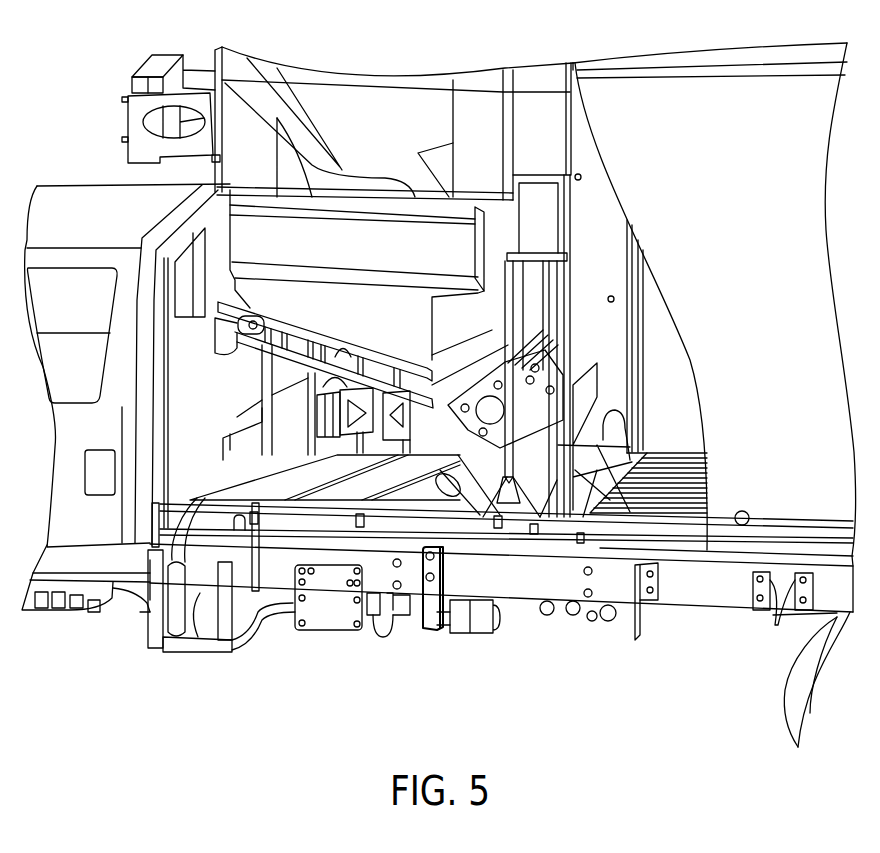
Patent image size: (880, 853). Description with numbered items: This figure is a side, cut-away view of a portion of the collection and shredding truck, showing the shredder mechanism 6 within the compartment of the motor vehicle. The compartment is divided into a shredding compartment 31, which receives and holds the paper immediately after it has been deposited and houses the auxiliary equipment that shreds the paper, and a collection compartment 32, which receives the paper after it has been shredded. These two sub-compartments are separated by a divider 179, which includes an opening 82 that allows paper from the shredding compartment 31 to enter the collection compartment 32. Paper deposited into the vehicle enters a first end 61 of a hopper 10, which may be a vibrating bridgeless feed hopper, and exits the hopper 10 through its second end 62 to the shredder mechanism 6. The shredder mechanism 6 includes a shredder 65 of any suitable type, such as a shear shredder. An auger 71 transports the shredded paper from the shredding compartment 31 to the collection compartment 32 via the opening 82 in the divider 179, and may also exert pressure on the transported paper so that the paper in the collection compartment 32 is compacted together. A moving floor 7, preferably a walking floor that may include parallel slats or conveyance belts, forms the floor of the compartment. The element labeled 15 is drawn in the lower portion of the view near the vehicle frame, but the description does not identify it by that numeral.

The first end of the hopper 61 is at (217, 78).
The shredding compartment 31 is at (213, 220).
The hopper 10 is at (230, 278).
The divider 179 is at (587, 218).
The shredder mechanism 6 is at (560, 323).
The collection compartment 32 is at (657, 298).
The second end of the hopper 62 is at (475, 363).
The opening 82 is at (598, 405).
The shredder 65 is at (470, 432).
The auger 71 is at (567, 440).
The moving floor 7 is at (660, 523).
The hydraulic cylinder 15 is at (193, 643).